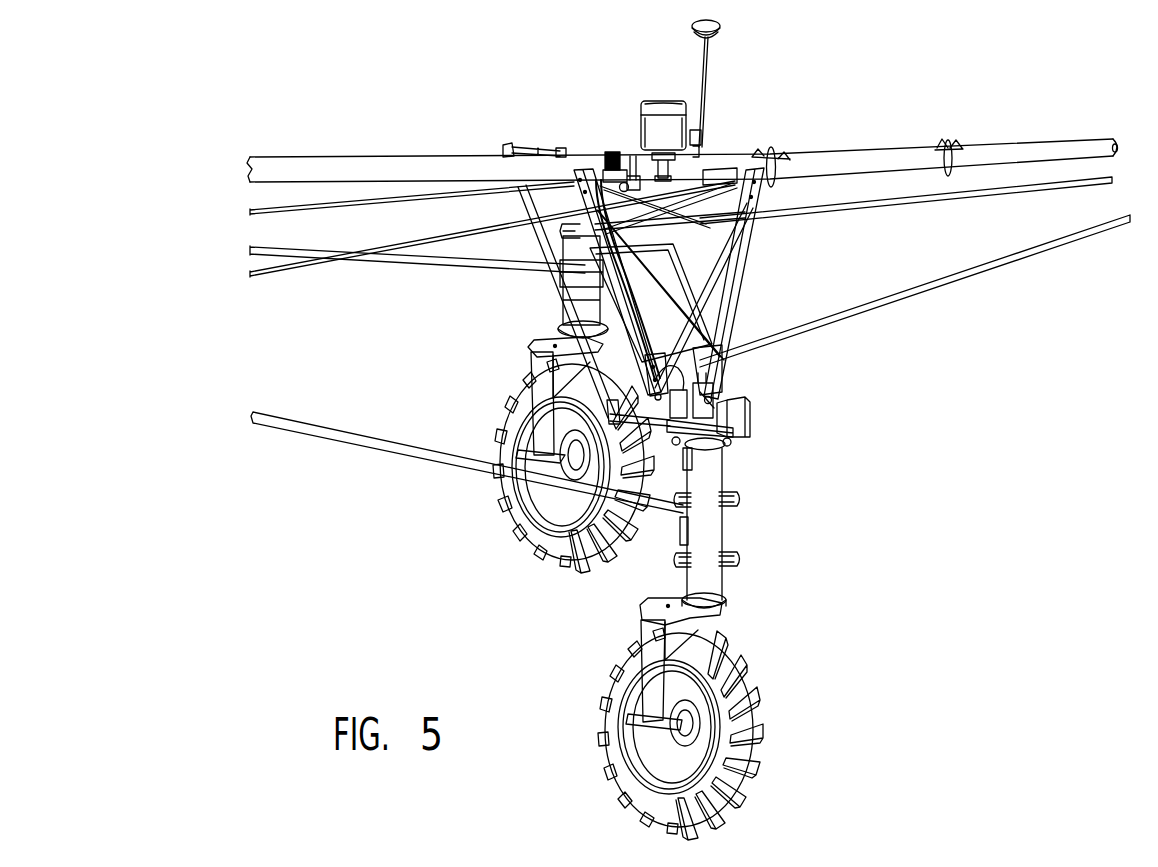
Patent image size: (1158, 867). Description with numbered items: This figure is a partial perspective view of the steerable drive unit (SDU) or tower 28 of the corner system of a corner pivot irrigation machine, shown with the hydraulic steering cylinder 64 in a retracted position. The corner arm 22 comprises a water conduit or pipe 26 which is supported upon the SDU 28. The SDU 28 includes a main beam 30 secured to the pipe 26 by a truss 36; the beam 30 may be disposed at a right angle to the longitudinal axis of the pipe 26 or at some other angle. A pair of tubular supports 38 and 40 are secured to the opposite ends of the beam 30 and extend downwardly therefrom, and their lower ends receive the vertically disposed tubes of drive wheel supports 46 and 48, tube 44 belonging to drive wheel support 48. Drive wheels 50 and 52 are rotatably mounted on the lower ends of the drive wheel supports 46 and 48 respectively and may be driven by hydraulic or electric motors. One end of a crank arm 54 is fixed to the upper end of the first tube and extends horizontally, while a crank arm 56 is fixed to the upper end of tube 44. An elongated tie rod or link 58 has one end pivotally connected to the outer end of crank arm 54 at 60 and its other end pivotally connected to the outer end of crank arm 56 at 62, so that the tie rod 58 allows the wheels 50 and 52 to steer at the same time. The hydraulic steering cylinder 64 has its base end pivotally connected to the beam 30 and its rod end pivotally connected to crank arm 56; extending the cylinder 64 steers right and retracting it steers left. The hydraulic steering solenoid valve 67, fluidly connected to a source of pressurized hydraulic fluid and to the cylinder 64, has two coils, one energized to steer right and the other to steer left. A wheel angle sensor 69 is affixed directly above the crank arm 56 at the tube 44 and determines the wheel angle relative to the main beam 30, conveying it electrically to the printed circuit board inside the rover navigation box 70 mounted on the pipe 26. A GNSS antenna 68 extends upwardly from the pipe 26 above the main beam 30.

The corner arm 22 is at (872, 146).
The water conduit or pipe 26 is at (416, 158).
The steerable drive unit (SDU) or tower 28 is at (726, 478).
The main beam 30 is at (708, 404).
The truss 36 is at (733, 279).
The tubular support 38 is at (590, 312).
The tubular support 40 is at (706, 538).
The vertically disposed tube 44 is at (738, 438).
The drive wheel support 46 is at (537, 343).
The drive wheel support 48 is at (650, 612).
The drive wheel 50 is at (542, 536).
The drive wheel 52 is at (763, 723).
The crank arm 54 is at (543, 150).
The crank arm 56 is at (716, 404).
The tie rod or link 58 is at (567, 281).
The pivotal connection 60 is at (505, 148).
The pivotal connection 62 is at (612, 415).
The hydraulic steering cylinder 64 is at (700, 398).
The hydraulic steering solenoid valve 67 is at (605, 152).
The GNSS antenna 68 is at (706, 62).
The wheel angle sensor 69 is at (748, 420).
The rover navigation box 70 is at (660, 106).